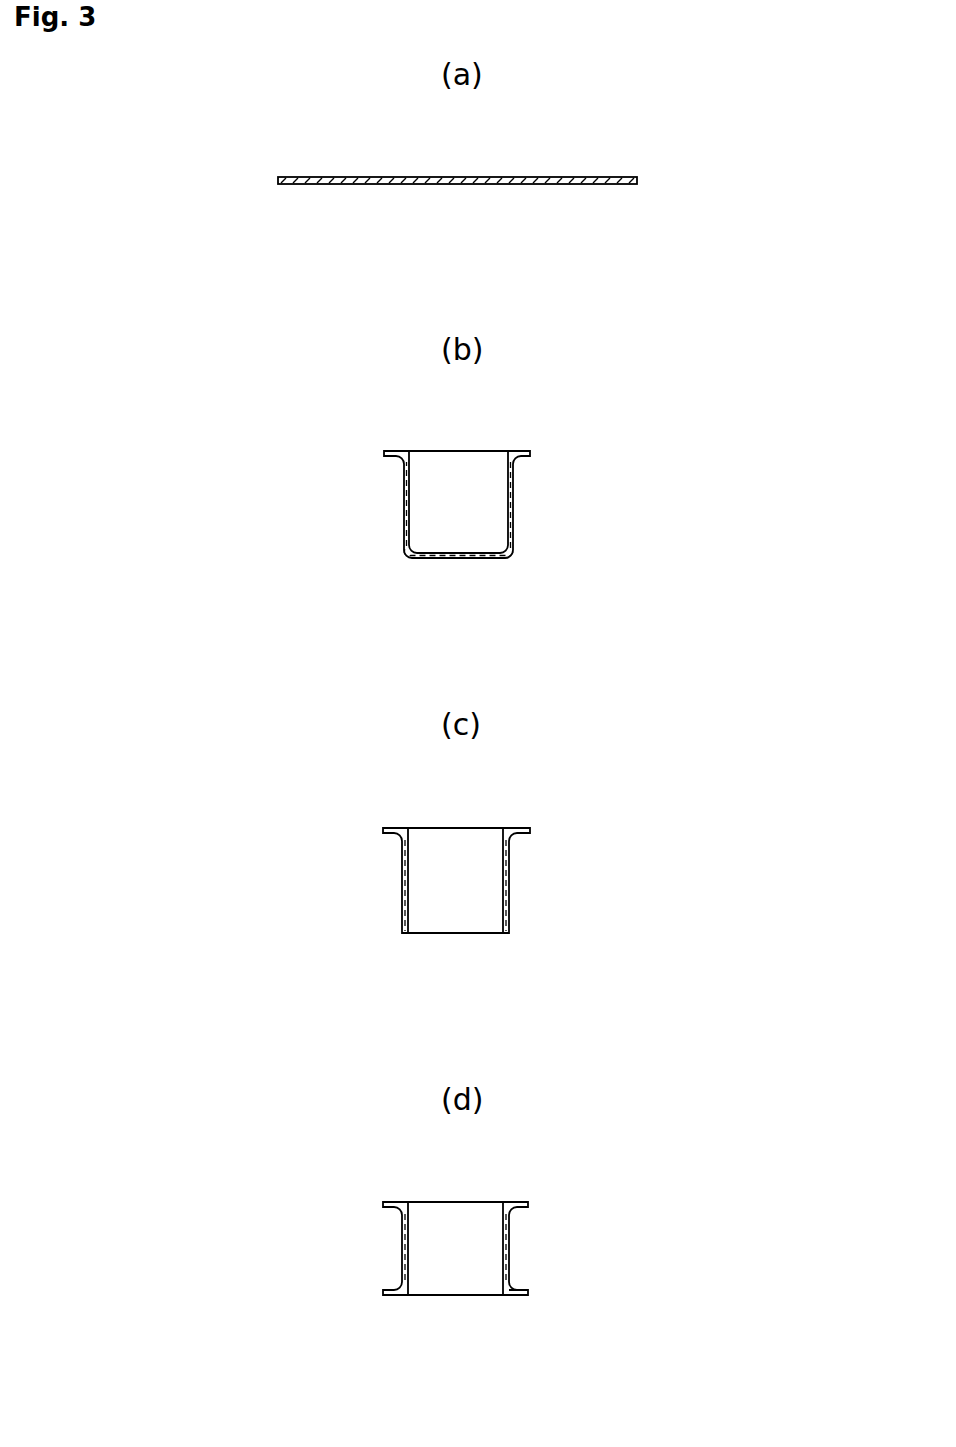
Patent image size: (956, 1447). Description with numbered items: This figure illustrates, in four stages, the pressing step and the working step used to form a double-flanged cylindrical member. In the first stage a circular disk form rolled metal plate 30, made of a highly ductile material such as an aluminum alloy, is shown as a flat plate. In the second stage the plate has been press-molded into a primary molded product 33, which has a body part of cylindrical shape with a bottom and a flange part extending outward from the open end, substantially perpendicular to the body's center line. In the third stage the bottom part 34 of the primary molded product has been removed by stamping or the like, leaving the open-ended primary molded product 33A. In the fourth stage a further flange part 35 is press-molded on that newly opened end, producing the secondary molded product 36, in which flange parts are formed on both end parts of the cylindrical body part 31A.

The rolled metal plate 30 is at (613, 157).
The cylindrical body part 31A is at (509, 1248).
The primary molded product 33 is at (555, 508).
The primary molded product with bottom removed 33A is at (540, 840).
The bottom part 34 is at (473, 560).
The flange part 35 is at (521, 1296).
The secondary molded product 36 is at (526, 1243).